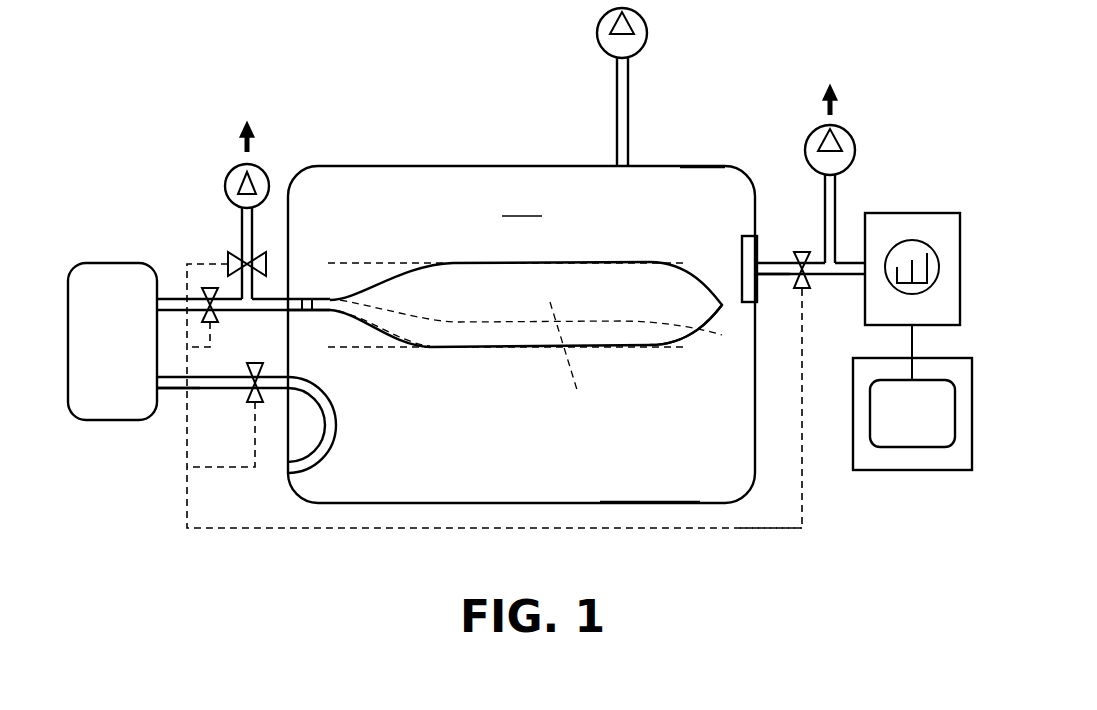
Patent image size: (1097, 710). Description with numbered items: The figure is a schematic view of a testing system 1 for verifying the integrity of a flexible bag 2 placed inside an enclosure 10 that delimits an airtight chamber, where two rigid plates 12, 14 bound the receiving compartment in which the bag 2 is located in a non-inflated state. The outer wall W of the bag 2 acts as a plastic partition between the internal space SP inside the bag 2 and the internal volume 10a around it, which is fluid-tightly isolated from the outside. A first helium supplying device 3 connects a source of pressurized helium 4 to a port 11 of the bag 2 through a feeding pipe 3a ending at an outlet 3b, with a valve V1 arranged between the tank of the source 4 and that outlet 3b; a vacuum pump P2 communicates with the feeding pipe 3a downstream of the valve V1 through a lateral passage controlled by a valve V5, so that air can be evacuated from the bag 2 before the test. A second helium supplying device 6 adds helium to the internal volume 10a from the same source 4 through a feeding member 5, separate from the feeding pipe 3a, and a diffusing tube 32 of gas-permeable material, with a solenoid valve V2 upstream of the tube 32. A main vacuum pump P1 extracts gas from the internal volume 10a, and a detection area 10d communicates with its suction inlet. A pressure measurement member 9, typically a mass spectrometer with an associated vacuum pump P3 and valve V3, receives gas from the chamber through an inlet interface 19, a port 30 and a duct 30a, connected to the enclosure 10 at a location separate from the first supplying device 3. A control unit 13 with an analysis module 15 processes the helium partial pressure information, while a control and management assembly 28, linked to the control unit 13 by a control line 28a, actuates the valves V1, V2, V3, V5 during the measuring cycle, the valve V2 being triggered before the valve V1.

The testing system 1 is at (450, 142).
The flexible bag 2 is at (698, 335).
The first helium supplying device 3 is at (162, 277).
The feeding pipe 3a is at (298, 299).
The outlet 3b is at (300, 320).
The source of pressurized helium 4 is at (92, 288).
The feeding member 5 is at (222, 382).
The second helium supplying device 6 is at (170, 402).
The pressure measurement member 9 is at (928, 225).
The enclosure 10 is at (350, 503).
The internal volume 10a is at (653, 453).
The detection area 10d is at (720, 225).
The port 11 is at (313, 299).
The plate 12 is at (387, 347).
The control unit 13 is at (892, 470).
The plate 14 is at (355, 262).
The analysis module 15 is at (927, 425).
The inlet interface 19 is at (757, 238).
The control and management assembly 28 is at (200, 222).
The control line 28a is at (772, 528).
The port 30 is at (818, 275).
The duct 30a is at (765, 277).
The tube 32 is at (335, 442).
The vacuum pump P1 is at (643, 87).
The vacuum pump P2 is at (226, 210).
The vacuum pump P3 is at (849, 174).
The valve V1 is at (213, 325).
The valve V2 is at (260, 402).
The valve V3 is at (804, 288).
The valve V5 is at (230, 262).
The outer wall W is at (435, 347).
The internal space SP is at (572, 361).